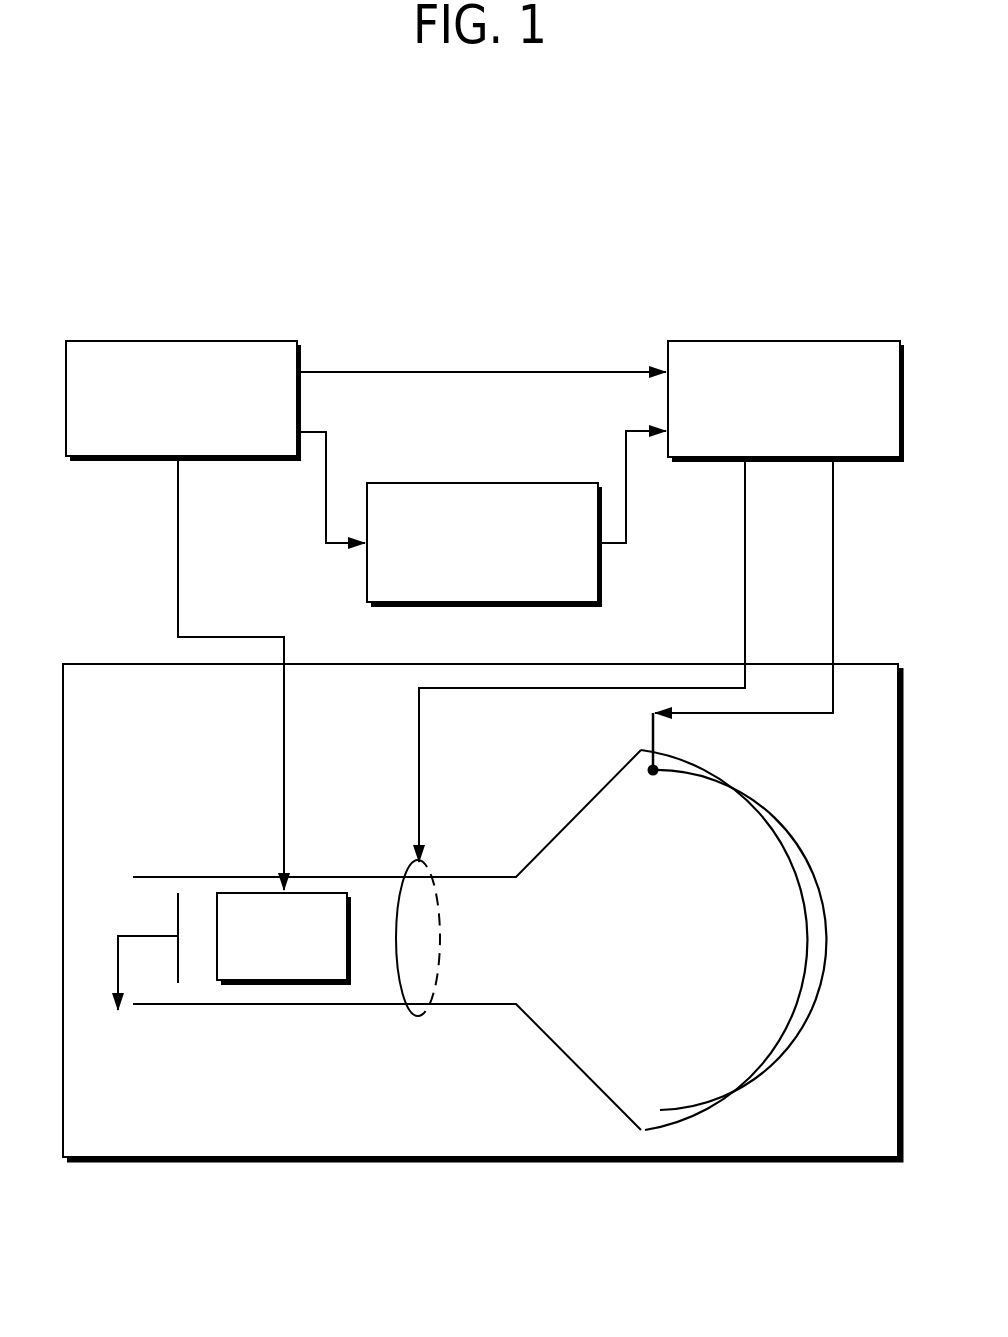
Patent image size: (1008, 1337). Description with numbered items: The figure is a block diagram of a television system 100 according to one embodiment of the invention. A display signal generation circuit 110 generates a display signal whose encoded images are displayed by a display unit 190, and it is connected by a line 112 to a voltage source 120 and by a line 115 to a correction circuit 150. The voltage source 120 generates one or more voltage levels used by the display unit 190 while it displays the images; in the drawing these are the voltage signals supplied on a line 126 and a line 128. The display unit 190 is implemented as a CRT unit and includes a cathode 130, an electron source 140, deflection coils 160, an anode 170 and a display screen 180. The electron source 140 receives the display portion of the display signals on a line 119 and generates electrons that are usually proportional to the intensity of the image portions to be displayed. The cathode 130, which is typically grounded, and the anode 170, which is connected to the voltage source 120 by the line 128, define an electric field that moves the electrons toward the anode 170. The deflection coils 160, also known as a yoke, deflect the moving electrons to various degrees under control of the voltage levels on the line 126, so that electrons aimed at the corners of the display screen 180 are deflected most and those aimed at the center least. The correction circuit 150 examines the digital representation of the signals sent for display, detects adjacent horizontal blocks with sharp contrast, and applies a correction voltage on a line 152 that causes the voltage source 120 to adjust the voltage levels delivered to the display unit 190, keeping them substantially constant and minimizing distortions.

The television system 100 is at (530, 210).
The display signal generation circuit 110 is at (158, 441).
The line 112 is at (470, 372).
The line 115 is at (327, 443).
The line 119 is at (179, 536).
The voltage source 120 is at (762, 427).
The line 126 is at (745, 537).
The line 128 is at (835, 538).
The cathode 130 is at (178, 904).
The electron source 140 is at (262, 964).
The correction circuit 150 is at (462, 571).
The line 152 is at (626, 446).
The deflection coils 160 is at (418, 1016).
The anode 170 is at (813, 941).
The display screen 180 is at (764, 1091).
The display unit 190 is at (83, 711).